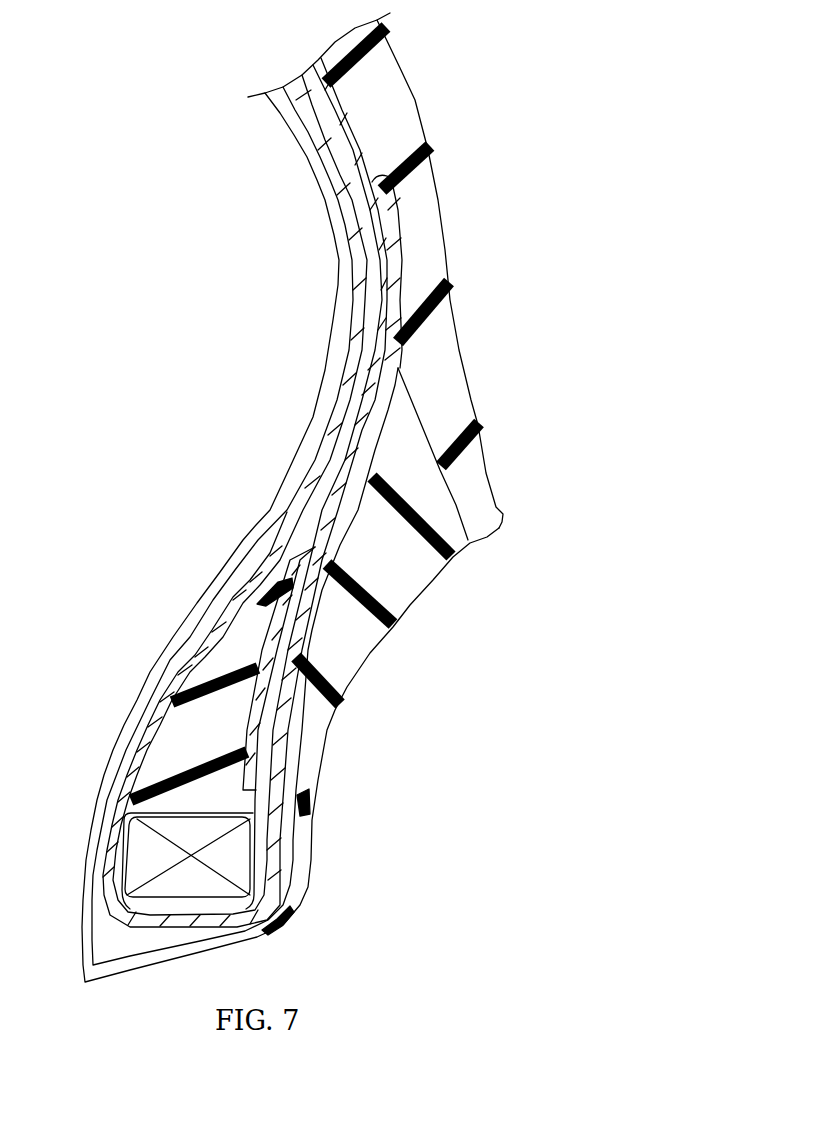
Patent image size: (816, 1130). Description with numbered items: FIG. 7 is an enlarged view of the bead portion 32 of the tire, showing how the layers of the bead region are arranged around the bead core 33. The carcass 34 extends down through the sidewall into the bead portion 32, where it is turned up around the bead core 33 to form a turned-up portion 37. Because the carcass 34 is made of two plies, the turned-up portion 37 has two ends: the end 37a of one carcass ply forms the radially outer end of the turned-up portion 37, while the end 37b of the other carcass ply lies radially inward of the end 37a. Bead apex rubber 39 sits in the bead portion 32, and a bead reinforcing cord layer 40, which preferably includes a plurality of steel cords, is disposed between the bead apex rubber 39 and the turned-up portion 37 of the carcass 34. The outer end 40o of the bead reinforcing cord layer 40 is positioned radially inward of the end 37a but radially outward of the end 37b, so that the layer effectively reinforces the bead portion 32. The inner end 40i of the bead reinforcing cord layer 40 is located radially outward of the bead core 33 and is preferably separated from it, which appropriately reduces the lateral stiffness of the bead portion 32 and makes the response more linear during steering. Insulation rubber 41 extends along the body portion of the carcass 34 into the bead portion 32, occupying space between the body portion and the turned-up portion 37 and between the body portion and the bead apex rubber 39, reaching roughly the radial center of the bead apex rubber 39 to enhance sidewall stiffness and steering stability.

The bead portion 32 is at (432, 604).
The bead core 33 is at (146, 855).
The carcass 34 is at (350, 292).
The turned-up portion 37 is at (270, 773).
The end of one carcass ply 37a is at (375, 178).
The end of the other carcass ply 37b is at (297, 642).
The bead apex rubber 39 is at (226, 660).
The bead reinforcing cord layer 40 is at (312, 544).
The outer end of the bead reinforcing cord layer 40o is at (393, 360).
The inner end of the bead reinforcing cord layer 40i is at (278, 826).
The insulation rubber 41 is at (342, 114).